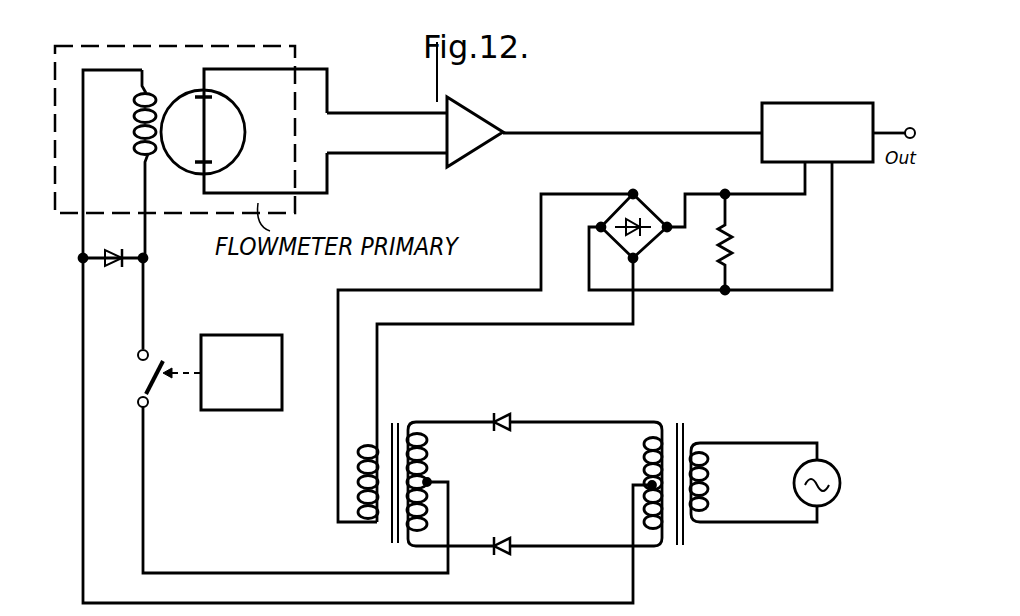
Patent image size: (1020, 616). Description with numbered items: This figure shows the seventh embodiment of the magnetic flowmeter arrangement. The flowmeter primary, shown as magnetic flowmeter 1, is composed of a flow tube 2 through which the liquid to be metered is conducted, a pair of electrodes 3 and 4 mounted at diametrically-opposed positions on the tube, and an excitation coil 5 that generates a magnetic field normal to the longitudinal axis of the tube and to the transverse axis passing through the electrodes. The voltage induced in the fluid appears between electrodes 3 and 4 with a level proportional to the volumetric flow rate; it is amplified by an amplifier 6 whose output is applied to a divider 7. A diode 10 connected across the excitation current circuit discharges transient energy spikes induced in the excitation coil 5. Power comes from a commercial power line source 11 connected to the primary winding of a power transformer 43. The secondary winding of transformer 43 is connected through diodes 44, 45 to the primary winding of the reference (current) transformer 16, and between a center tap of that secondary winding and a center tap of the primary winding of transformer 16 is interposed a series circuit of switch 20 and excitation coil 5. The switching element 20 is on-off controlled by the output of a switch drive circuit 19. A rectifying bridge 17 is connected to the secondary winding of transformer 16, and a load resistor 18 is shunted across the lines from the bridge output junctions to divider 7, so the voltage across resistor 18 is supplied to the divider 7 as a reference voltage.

The magnetic flowmeter 1 is at (297, 52).
The flow tube 2 is at (177, 93).
The electrode 3 is at (201, 106).
The electrode 4 is at (203, 157).
The excitation coil 5 is at (136, 133).
The amplifier 6 is at (481, 120).
The divider 7 is at (826, 103).
The diode 10 is at (111, 270).
The commercial power line source 11 is at (840, 468).
The current transformer 16 is at (398, 420).
The rectifying bridge 17 is at (648, 247).
The load resistor 18 is at (733, 244).
The switch drive circuit 19 is at (233, 412).
The switching element 20 is at (142, 377).
The power transformer 43 is at (683, 422).
The diode 44 is at (500, 416).
The diode 45 is at (500, 538).